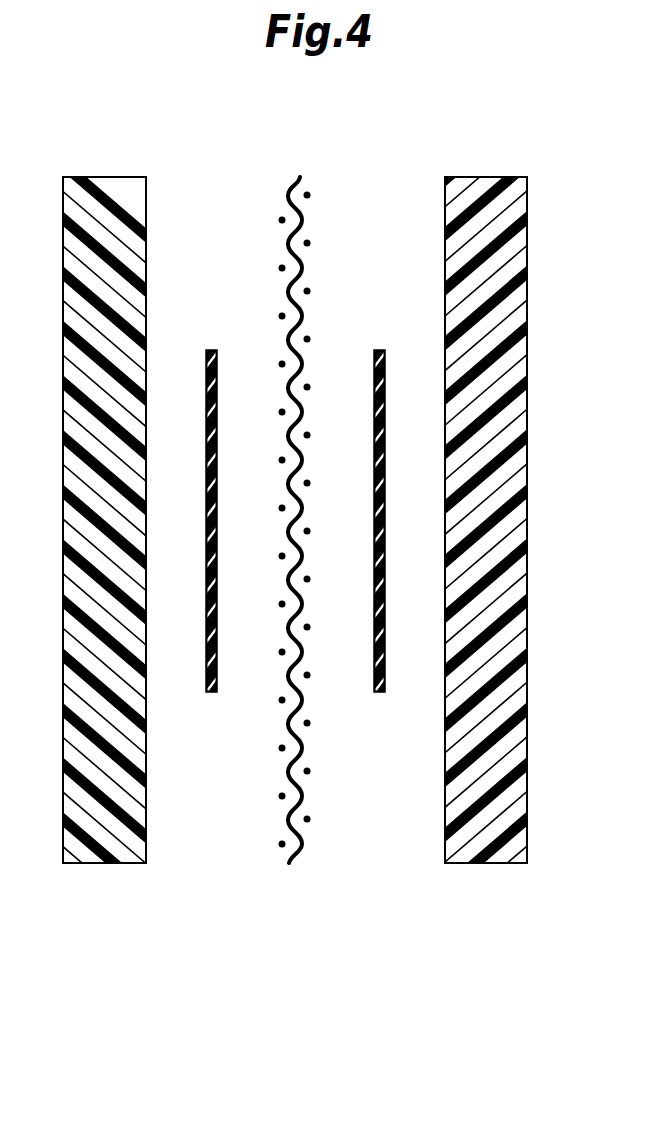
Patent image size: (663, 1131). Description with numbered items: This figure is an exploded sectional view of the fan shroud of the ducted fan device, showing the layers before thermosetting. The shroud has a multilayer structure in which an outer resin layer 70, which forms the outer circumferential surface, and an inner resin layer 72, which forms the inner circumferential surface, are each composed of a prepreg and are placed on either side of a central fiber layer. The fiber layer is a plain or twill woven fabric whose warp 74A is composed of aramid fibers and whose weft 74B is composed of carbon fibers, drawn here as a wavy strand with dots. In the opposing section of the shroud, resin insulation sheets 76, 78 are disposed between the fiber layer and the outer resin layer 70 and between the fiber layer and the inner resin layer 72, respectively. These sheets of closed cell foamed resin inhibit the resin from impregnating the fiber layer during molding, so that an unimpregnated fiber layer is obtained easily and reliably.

The outer resin layer 70 is at (105, 845).
The inner resin layer 72 is at (482, 843).
The warp 74A is at (304, 226).
The weft 74B is at (280, 268).
The resin insulation sheet 76 is at (379, 693).
The resin insulation sheet 78 is at (211, 693).